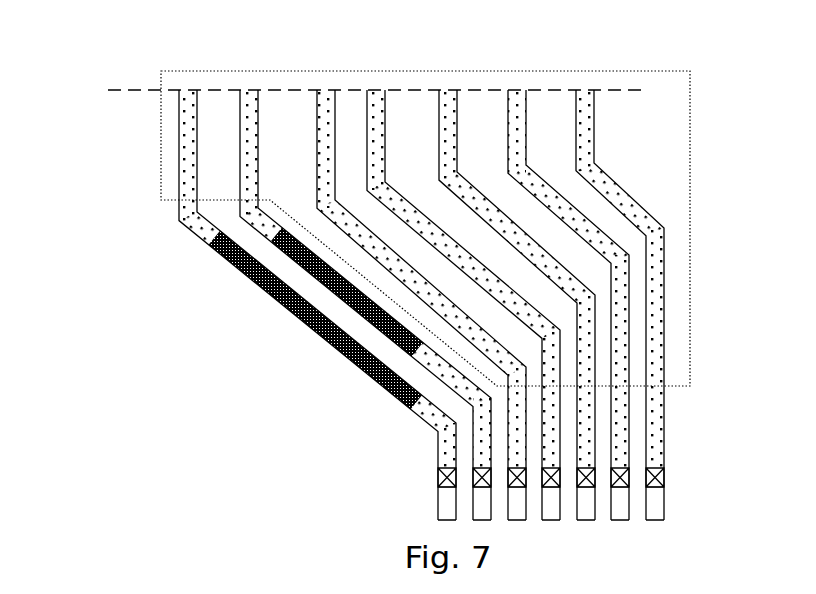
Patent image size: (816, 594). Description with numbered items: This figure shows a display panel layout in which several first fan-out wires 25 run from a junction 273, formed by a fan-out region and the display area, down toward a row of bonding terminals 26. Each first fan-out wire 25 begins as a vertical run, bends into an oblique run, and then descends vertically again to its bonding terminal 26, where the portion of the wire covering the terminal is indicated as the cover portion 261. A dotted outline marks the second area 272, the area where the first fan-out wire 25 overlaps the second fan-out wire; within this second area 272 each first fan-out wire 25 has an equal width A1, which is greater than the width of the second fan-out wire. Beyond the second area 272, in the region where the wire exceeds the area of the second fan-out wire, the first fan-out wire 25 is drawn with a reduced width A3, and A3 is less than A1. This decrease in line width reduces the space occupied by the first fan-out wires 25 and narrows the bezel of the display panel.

The first fan-out wire 25 is at (630, 207).
The bonding terminal 26 is at (447, 500).
The cover portion 261 is at (447, 477).
The second area 272 is at (691, 71).
The junction 273 is at (143, 89).
The width of the first fan-out wire in the second area A1 is at (584, 210).
The width of the first fan-out wire in the first area A3 is at (387, 291).